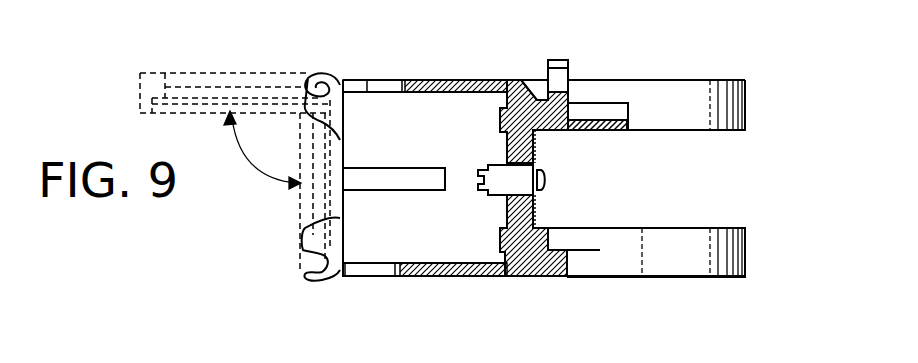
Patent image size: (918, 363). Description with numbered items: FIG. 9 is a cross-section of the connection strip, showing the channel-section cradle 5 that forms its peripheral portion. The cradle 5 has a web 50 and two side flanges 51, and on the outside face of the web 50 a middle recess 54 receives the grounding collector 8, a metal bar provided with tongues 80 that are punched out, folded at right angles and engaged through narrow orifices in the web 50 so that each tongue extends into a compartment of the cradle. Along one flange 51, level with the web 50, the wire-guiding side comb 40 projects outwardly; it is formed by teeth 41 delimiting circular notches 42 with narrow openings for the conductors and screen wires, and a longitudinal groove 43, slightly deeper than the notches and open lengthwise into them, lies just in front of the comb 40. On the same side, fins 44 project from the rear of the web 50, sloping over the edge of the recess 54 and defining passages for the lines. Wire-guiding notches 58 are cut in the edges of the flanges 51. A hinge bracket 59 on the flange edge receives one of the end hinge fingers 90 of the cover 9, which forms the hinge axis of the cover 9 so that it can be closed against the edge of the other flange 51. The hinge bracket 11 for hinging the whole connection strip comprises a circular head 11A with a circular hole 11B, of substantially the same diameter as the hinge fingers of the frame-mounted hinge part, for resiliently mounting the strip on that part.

The cradle 5 is at (467, 81).
The grounding collector 8 is at (537, 150).
The cover 9 is at (162, 83).
The hinge bracket 11 is at (690, 156).
The circular head 11A is at (746, 112).
The circular hole 11B is at (643, 100).
The wire-guiding side comb 40 is at (560, 51).
The teeth 41 is at (556, 63).
The circular notches 42 is at (546, 55).
The longitudinal groove 43 is at (537, 92).
The fins 44 is at (600, 112).
The web 50 is at (506, 209).
The side flanges 51 is at (430, 84).
The middle recess 54 is at (560, 133).
The wire-guiding notches 58 is at (386, 87).
The hinge brackets 59 is at (302, 80).
The tongues 80 is at (502, 176).
The end hinge fingers 90 is at (322, 73).